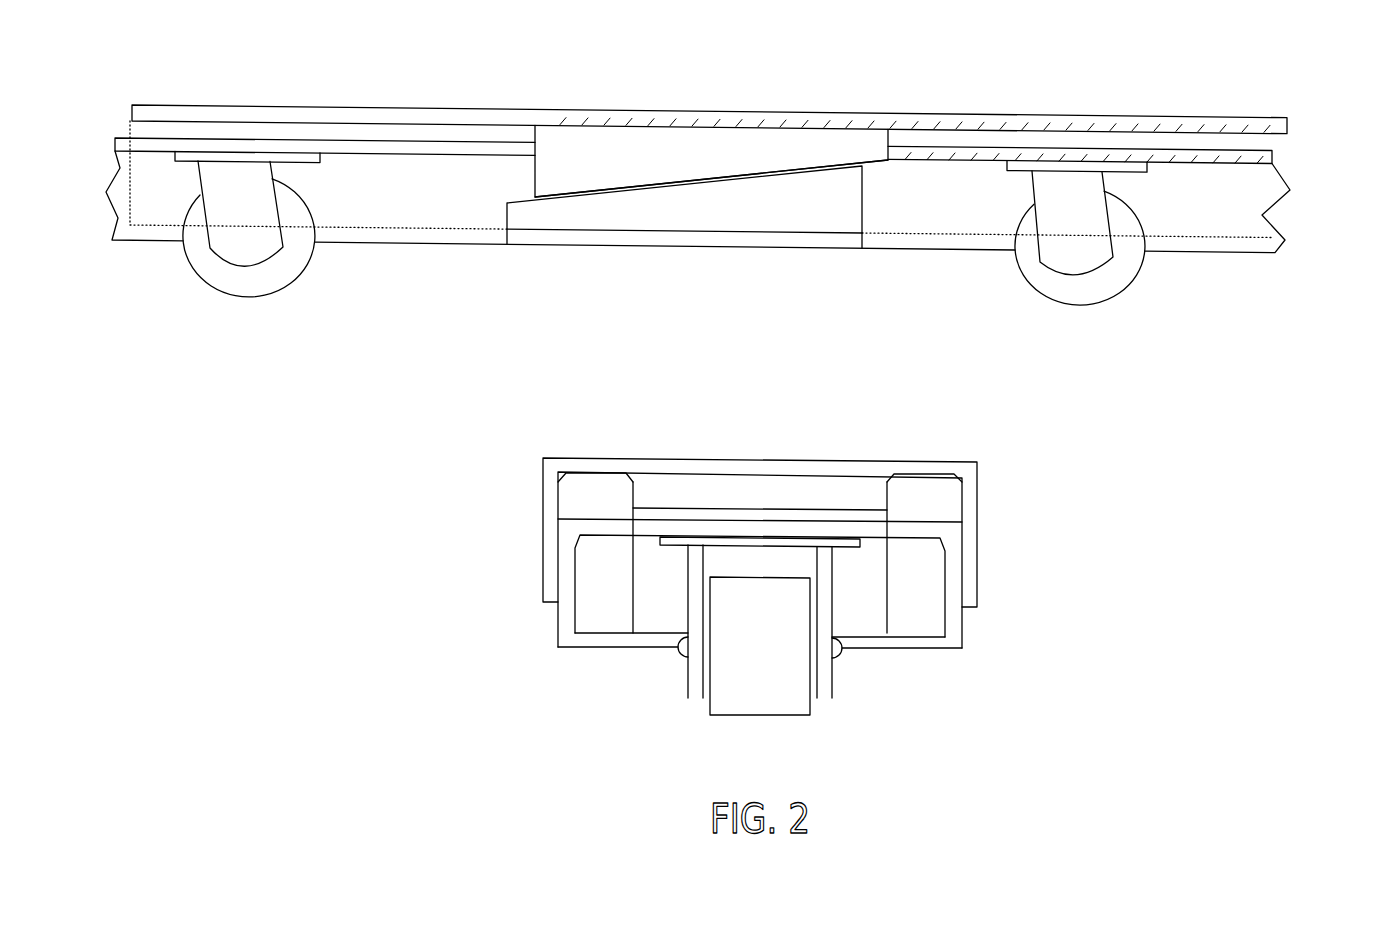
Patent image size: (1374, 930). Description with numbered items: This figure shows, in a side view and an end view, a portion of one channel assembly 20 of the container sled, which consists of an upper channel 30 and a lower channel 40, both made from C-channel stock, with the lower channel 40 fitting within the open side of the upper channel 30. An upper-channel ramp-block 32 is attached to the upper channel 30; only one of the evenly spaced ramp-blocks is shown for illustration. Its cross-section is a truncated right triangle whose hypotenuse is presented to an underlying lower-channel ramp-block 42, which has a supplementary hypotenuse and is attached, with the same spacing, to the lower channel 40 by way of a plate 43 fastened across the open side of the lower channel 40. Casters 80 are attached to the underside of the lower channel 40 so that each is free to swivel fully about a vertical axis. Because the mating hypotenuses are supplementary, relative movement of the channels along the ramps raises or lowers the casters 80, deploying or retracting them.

The channel assembly 20 is at (1307, 102).
The upper channel 30 is at (205, 132).
The upper-channel ramp-block 32 is at (657, 153).
The lower channel 40 is at (120, 205).
The lower-channel ramp-block 42 is at (783, 205).
The plate 43 is at (615, 228).
The caster 80 is at (273, 272).